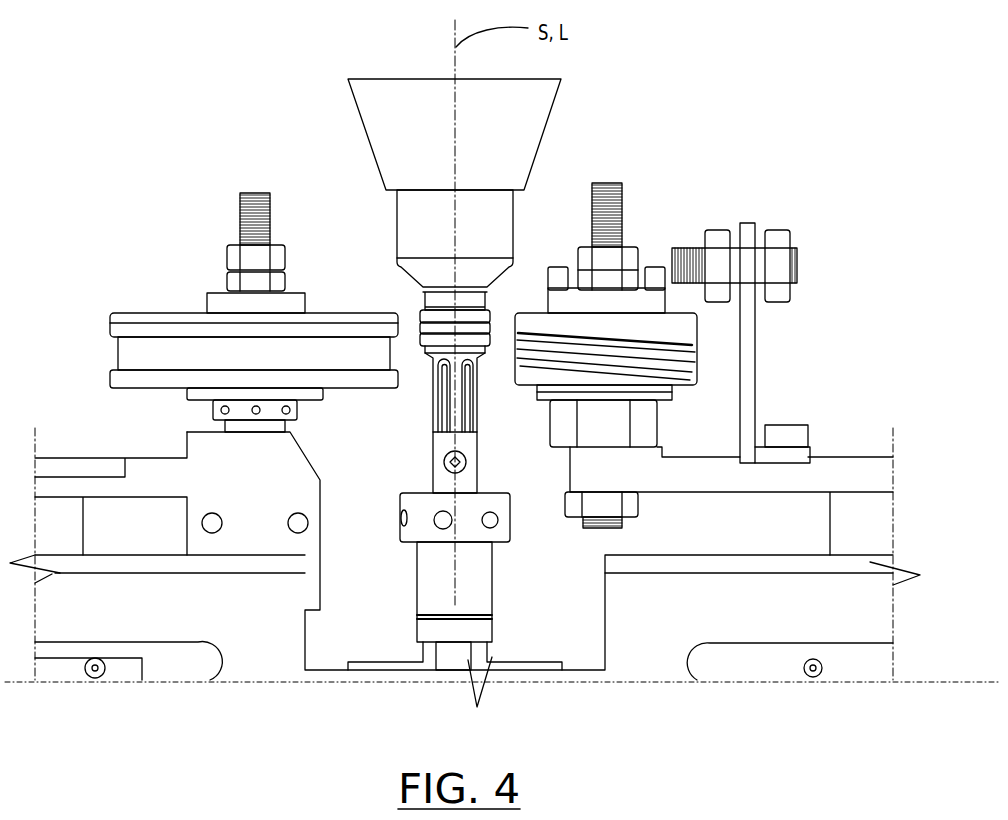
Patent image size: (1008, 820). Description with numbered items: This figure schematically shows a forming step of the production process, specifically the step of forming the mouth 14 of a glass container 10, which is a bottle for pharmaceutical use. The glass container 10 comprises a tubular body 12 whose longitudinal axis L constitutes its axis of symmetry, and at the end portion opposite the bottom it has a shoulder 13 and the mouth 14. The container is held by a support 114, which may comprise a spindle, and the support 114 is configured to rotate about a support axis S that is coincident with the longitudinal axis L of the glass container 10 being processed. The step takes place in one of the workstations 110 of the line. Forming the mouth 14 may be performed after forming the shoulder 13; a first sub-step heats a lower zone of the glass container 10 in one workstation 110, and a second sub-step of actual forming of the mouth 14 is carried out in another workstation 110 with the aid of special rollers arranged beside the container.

The glass container 10 is at (527, 208).
The tubular body 12 is at (397, 217).
The shoulder 13 is at (417, 283).
The mouth 14 is at (425, 328).
The workstation 110 is at (832, 197).
The support 114 is at (549, 108).